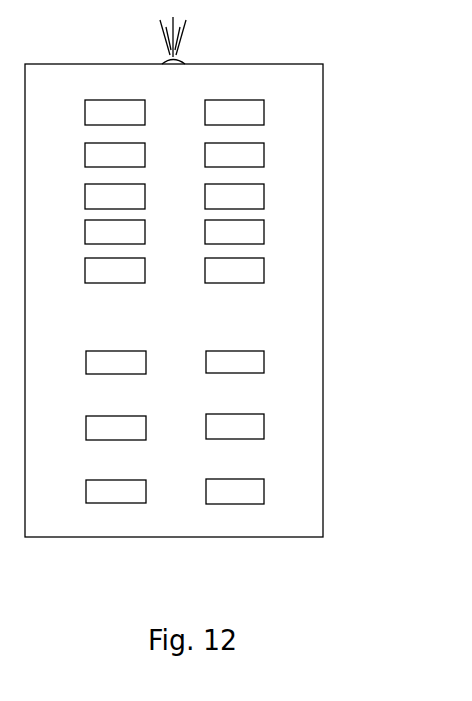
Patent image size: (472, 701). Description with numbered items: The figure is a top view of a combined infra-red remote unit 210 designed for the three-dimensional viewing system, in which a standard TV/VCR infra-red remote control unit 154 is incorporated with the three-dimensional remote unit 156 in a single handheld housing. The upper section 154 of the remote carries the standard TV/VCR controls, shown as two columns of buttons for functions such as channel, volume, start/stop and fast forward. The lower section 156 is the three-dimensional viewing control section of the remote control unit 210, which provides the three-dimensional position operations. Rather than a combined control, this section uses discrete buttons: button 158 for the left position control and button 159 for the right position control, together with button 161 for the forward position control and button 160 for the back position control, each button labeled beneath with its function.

The combined remote unit 210 is at (352, 300).
The TV/VCR infra-red remote control unit 154 is at (336, 93).
The 3-D remote unit 156 is at (219, 440).
The left position control button 158 is at (91, 421).
The right position control button 159 is at (260, 421).
The back position control button 160 is at (261, 489).
The forward position control button 161 is at (92, 487).